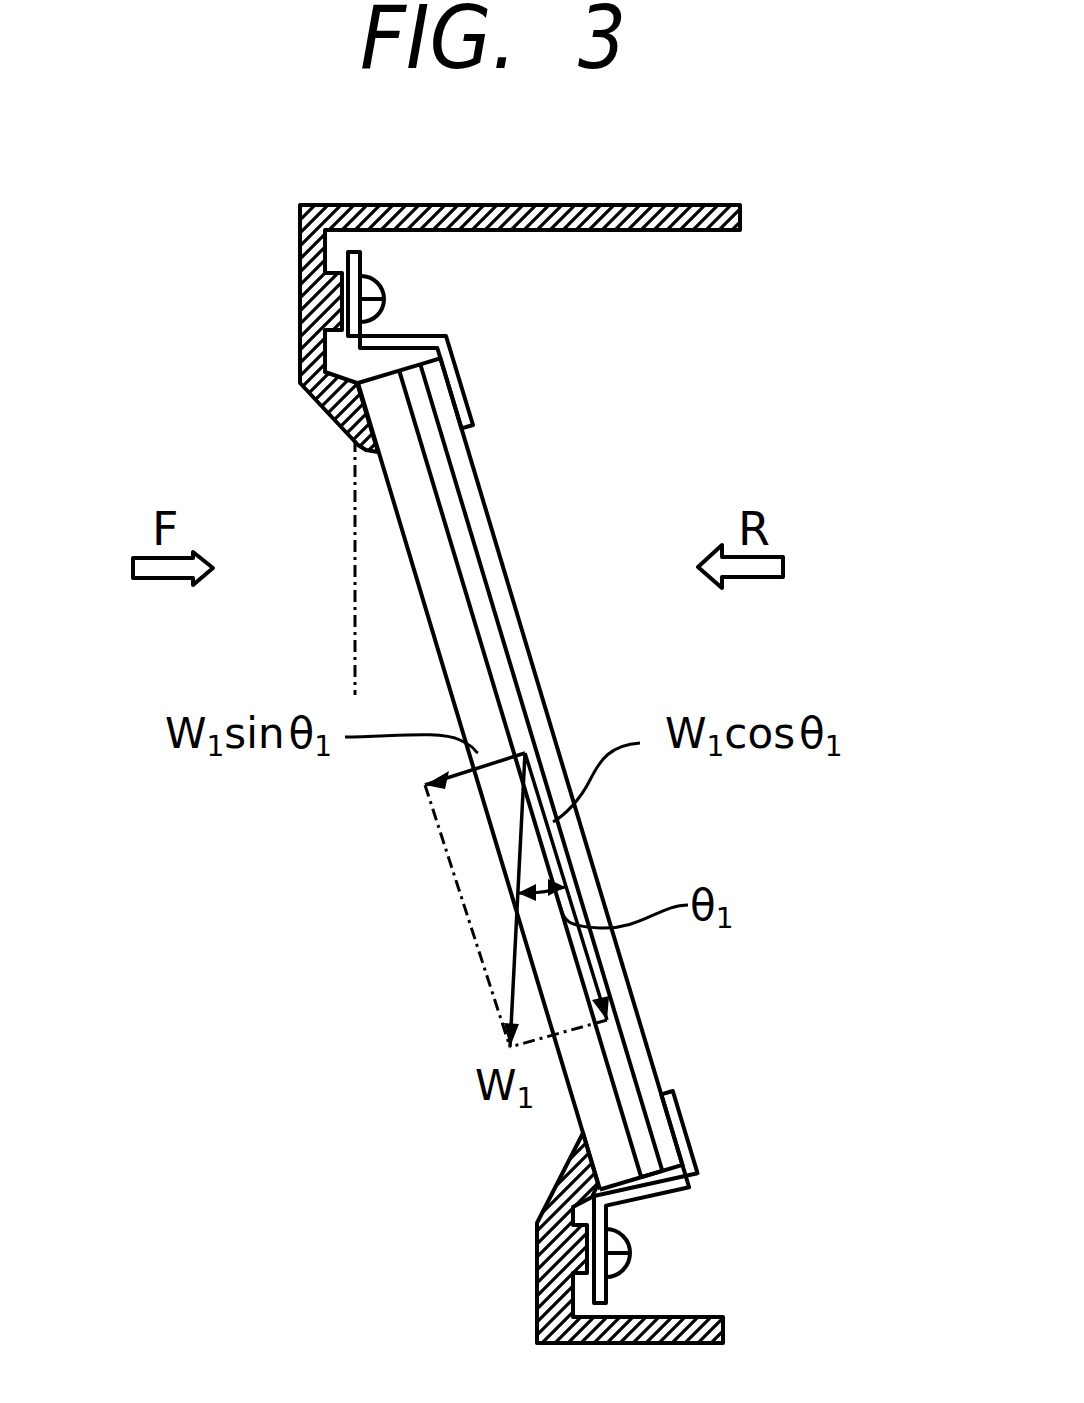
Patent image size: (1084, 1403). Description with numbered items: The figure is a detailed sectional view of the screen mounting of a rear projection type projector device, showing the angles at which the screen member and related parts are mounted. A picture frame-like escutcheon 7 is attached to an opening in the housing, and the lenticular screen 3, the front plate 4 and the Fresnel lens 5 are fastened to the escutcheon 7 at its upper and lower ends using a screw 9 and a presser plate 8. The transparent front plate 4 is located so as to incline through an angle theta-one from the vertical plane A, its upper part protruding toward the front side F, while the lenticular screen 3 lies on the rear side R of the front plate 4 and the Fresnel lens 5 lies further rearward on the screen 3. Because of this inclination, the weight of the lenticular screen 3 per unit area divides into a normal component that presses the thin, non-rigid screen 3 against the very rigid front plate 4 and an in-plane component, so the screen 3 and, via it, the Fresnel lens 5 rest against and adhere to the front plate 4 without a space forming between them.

The lenticular screen 3 is at (480, 610).
The front plate 4 is at (465, 678).
The Fresnel lens 5 is at (480, 530).
The escutcheon 7 is at (300, 272).
The presser plate 8 is at (470, 363).
The screw 9 is at (385, 289).
The vertical plane A is at (355, 472).